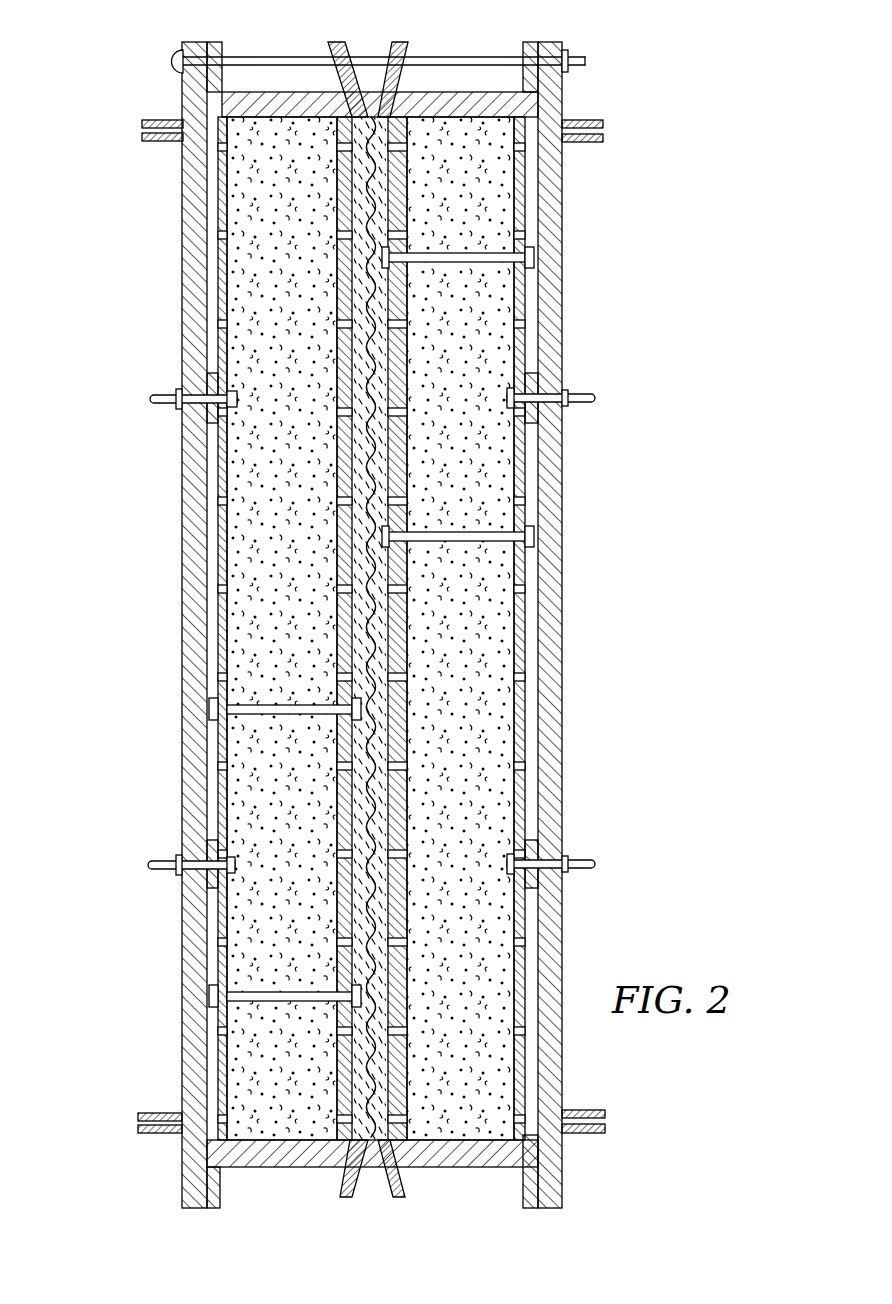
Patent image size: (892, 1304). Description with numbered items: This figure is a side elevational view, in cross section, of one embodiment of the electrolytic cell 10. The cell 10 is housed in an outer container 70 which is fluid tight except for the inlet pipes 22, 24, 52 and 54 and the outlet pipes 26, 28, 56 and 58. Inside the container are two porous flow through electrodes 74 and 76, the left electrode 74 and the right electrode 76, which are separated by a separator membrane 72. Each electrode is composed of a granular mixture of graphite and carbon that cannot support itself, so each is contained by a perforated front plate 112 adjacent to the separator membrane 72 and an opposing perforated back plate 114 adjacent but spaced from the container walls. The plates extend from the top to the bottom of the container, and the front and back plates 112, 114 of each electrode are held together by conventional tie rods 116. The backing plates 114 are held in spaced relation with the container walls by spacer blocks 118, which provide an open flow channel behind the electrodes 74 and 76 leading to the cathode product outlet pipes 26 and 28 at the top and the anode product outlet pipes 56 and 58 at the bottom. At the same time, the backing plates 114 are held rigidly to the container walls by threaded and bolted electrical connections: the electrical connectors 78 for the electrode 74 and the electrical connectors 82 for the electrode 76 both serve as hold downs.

The cell 10 is at (396, 622).
The inlet pipe 22 is at (338, 1194).
The inlet pipe 24 is at (407, 1194).
The cathode product outlet pipe 26 is at (142, 123).
The cathode product outlet pipe 28 is at (603, 122).
The inlet pipe 52 is at (331, 55).
The inlet pipe 54 is at (407, 52).
The anode product outlet pipe 56 is at (140, 1115).
The anode product outlet pipe 58 is at (575, 1112).
The outer container 70 is at (563, 492).
The separator membrane 72 is at (378, 652).
The porous flow through electrode 74 is at (292, 790).
The porous flow through electrode 76 is at (474, 1000).
The electrical connector 78 is at (153, 396).
The electrical connector 82 is at (597, 398).
The perforated front plate 112 is at (340, 272).
The perforated back plate 114 is at (218, 530).
The tie rod 116 is at (440, 254).
The spacer block 118 is at (205, 412).